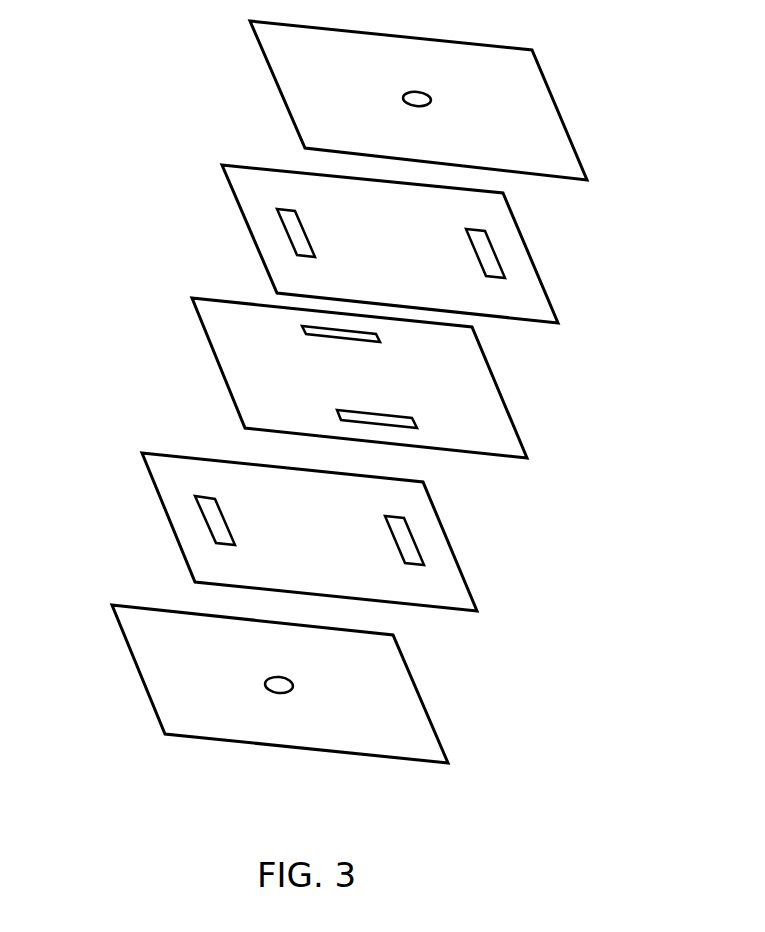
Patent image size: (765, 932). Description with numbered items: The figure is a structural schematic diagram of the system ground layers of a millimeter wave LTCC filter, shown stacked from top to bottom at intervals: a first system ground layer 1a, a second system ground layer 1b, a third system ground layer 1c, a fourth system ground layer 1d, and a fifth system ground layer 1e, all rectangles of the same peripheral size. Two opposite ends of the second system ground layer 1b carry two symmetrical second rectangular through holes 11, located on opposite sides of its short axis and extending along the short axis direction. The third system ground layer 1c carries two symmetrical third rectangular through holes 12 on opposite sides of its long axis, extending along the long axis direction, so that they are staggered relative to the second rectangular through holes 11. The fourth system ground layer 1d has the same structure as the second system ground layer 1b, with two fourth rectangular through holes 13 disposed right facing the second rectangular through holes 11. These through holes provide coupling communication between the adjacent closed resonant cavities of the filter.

The first system ground layer 1a is at (314, 71).
The second system ground layer 1b is at (272, 193).
The third system ground layer 1c is at (255, 363).
The fourth system ground layer 1d is at (192, 479).
The fifth system ground layer 1e is at (163, 660).
The second rectangular through hole 11 is at (482, 259).
The third rectangular through hole 12 is at (385, 422).
The fourth rectangular through hole 13 is at (405, 547).